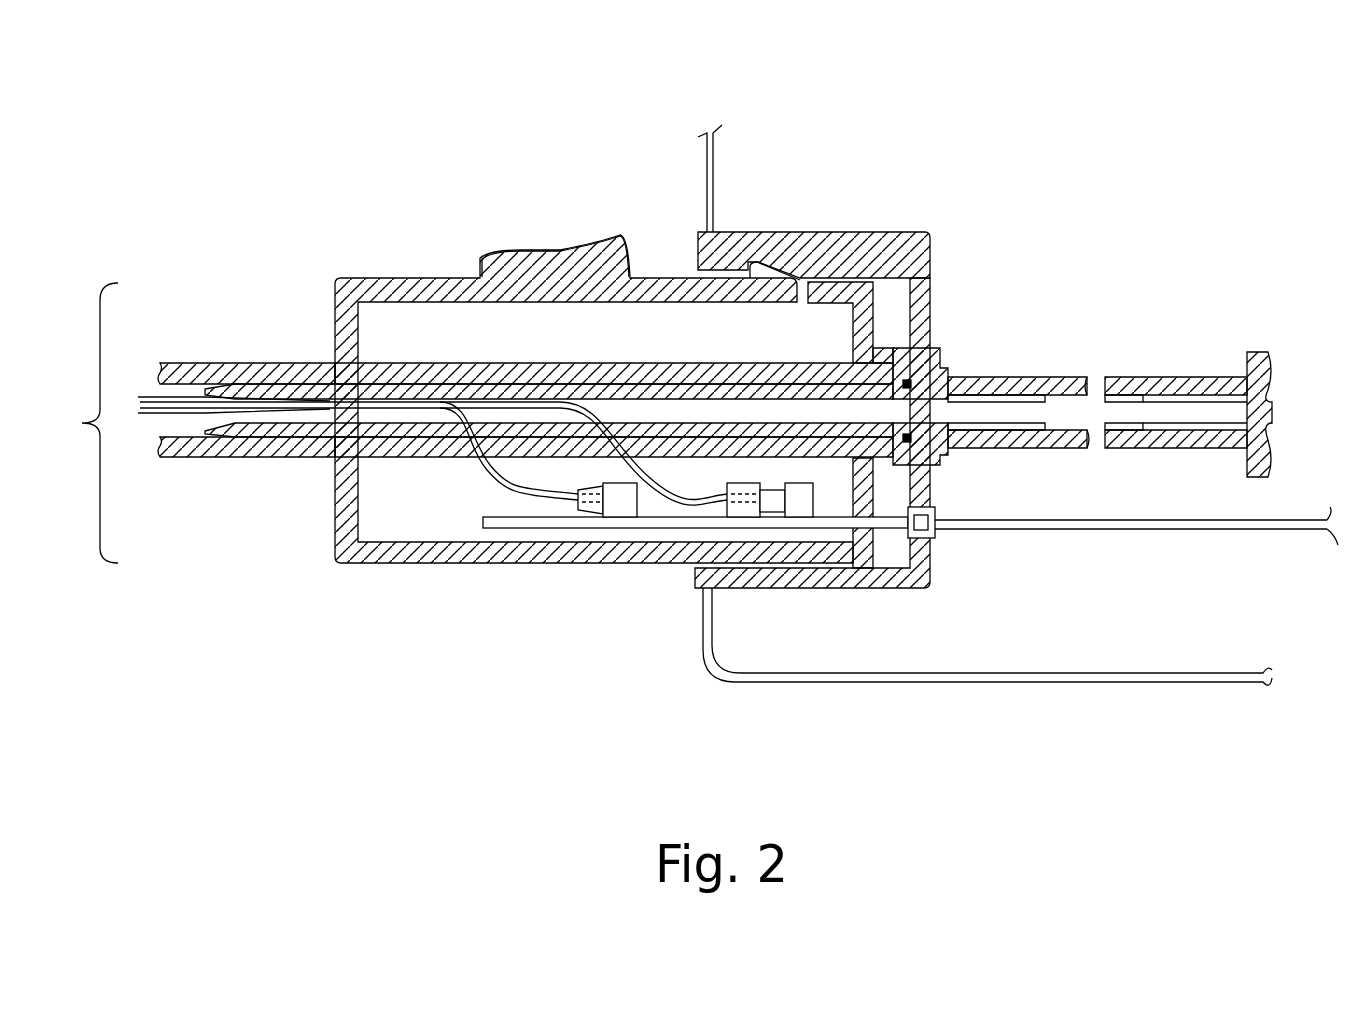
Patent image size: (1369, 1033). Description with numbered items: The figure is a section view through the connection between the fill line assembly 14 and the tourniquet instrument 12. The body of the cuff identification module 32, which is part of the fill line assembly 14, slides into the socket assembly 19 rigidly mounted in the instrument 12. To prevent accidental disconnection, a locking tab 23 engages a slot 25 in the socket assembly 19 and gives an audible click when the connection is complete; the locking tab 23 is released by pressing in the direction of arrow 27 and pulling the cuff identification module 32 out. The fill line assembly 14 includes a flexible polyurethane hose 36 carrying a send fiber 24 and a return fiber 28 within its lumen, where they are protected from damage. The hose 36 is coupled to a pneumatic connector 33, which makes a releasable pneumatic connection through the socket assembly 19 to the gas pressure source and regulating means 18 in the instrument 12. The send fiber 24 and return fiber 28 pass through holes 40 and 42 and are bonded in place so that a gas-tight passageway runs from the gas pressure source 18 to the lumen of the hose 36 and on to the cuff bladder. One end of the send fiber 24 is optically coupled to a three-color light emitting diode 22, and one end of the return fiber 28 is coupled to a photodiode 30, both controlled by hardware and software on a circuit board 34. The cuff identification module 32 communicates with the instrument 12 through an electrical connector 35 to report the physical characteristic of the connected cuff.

The tourniquet instrument 12 is at (1188, 684).
The fill line assembly 14 is at (180, 423).
The gas pressure source and regulating means 18 is at (1240, 363).
The socket assembly 19 is at (867, 590).
The three-color light emitting diode 22 is at (797, 505).
The locking tab 23 is at (757, 262).
The send fiber 24 is at (698, 503).
The slot 25 is at (797, 278).
The arrow 27 is at (548, 226).
The return fiber 28 is at (482, 480).
The photodiode 30 is at (620, 505).
The cuff identification module 32 is at (335, 562).
The pneumatic connector 33 is at (410, 362).
The circuit board 34 is at (527, 522).
The electrical connector 35 is at (935, 540).
The hose 36 is at (263, 363).
The hole 40 is at (620, 417).
The hole 42 is at (462, 385).